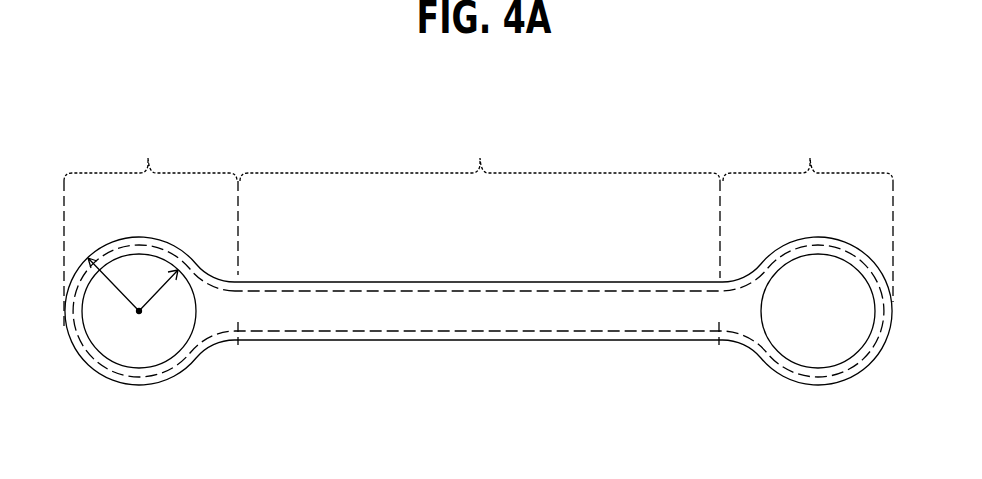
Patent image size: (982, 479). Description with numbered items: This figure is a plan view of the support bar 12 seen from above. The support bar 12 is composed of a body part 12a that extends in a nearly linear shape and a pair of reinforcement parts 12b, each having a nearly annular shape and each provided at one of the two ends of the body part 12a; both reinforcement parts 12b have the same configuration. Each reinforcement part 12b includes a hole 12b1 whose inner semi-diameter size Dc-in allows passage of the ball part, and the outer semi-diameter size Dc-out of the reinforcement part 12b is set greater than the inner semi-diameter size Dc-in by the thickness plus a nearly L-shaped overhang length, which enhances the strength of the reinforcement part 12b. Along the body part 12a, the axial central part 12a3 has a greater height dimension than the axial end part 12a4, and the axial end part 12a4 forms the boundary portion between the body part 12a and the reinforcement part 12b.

The support bar 12 is at (618, 143).
The body part 12a is at (479, 203).
The reinforcement part 12b is at (478, 229).
The hole 12b1 is at (102, 350).
The axial central part 12a3 is at (479, 317).
The axial end part 12a4 is at (237, 345).
The outer semi-diameter size Dc-out is at (112, 287).
The inner semi-diameter size Dc-in is at (158, 298).